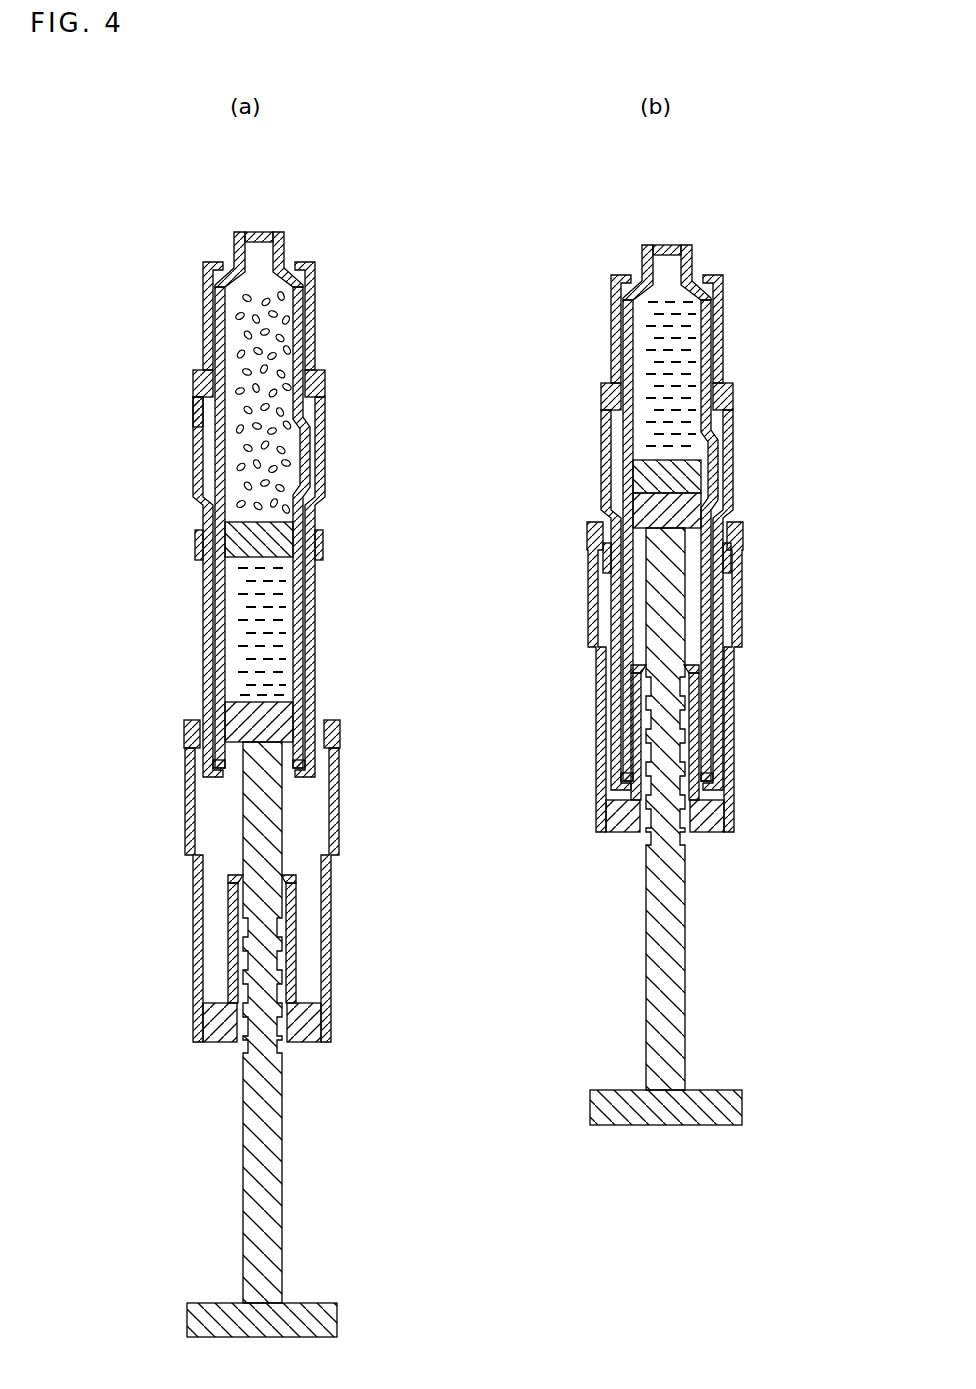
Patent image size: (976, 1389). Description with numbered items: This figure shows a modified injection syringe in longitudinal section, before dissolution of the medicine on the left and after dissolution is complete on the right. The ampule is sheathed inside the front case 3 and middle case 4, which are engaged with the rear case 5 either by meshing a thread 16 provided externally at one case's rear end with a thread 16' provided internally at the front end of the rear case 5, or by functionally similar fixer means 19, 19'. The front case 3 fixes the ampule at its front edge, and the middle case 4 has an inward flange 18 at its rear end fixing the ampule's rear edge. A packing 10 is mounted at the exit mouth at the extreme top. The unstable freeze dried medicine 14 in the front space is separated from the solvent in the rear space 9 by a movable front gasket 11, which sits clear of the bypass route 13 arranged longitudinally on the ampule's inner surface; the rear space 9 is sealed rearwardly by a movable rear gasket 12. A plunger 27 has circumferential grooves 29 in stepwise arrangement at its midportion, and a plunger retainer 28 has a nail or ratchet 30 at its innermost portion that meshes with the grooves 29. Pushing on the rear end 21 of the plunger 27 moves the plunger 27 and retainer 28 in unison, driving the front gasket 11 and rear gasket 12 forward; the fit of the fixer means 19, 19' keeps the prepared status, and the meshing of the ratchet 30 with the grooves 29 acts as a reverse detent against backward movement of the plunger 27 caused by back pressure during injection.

The front case 3 is at (316, 290).
The middle case 4 is at (322, 482).
The rear case 5 is at (333, 895).
The rear space 9 is at (288, 625).
The packing 10 is at (258, 230).
The front gasket 11 is at (285, 527).
The rear gasket 12 is at (300, 733).
The bypass route 13 is at (310, 452).
The unstable freeze dried medicine 14 is at (290, 578).
The thread 16 is at (408, 389).
The thread 16' is at (143, 413).
The inward flange 18 is at (320, 772).
The fixer means 19 is at (403, 550).
The fixer means 19' is at (202, 731).
The rear end 21 is at (330, 1320).
The plunger 27 is at (262, 800).
The plunger retainer 28 is at (213, 1020).
The circumferential grooves 29 is at (233, 915).
The nail or ratchet 30 is at (235, 878).